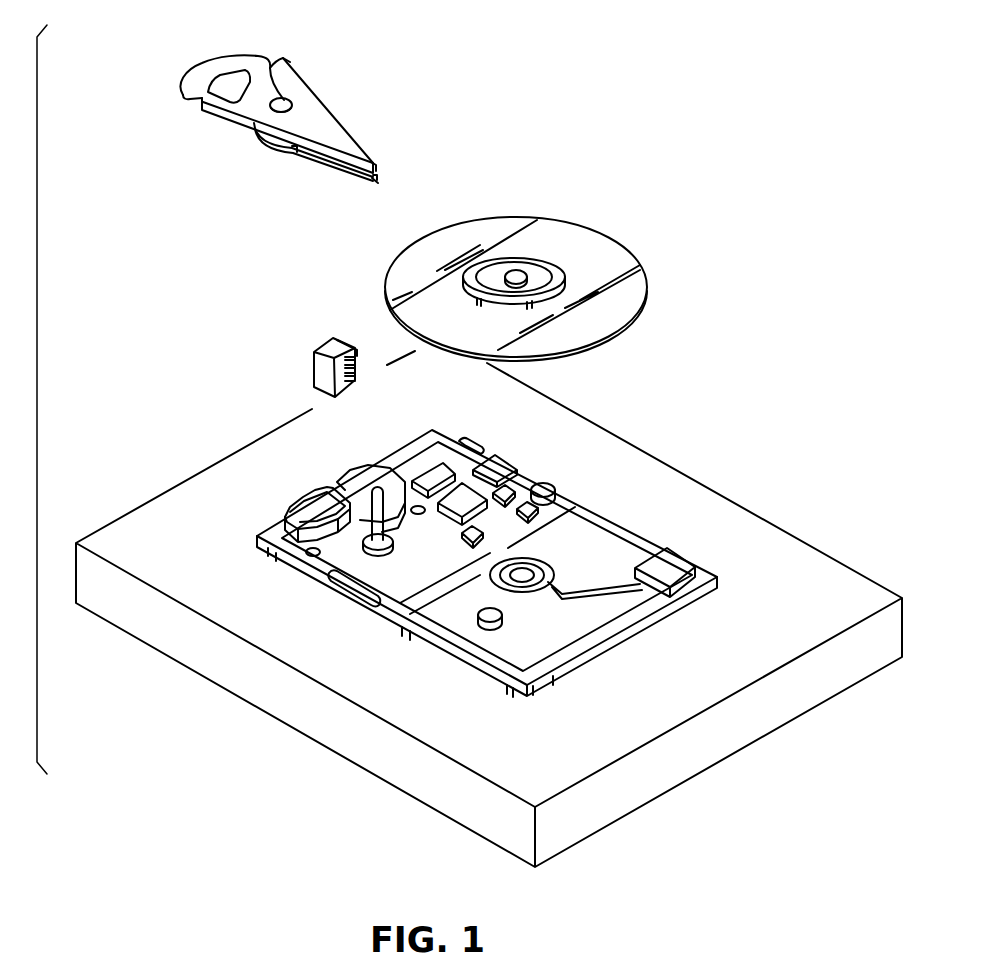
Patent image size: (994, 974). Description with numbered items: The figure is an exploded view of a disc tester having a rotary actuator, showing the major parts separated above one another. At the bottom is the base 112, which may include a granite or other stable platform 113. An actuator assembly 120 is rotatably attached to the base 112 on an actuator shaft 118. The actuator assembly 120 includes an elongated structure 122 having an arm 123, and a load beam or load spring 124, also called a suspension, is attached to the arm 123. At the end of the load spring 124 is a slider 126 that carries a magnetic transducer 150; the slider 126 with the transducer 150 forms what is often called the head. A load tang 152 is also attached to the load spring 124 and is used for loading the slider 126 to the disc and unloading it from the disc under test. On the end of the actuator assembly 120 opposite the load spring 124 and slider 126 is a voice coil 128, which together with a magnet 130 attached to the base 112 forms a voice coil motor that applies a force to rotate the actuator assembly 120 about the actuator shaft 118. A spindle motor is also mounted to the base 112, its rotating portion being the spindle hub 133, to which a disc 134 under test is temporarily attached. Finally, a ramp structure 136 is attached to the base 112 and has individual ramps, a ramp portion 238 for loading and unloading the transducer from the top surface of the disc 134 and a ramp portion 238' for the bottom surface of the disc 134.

The base 112 is at (622, 537).
The platform 113 is at (802, 542).
The actuator shaft 118 is at (282, 98).
The actuator assembly 120 is at (228, 118).
The elongated structure 122 is at (273, 150).
The arm 123 is at (302, 92).
The load spring 124 is at (347, 138).
The slider 126 is at (378, 173).
The voice coil 128 is at (208, 72).
The magnet 130 is at (328, 493).
The spindle hub 133 is at (527, 272).
The disc 134 is at (620, 258).
The ramp structure 136 is at (322, 370).
The magnetic transducer 150 is at (378, 179).
The load tang 152 is at (378, 187).
The ramp portion 238 is at (318, 326).
The ramp portion 238' is at (380, 385).